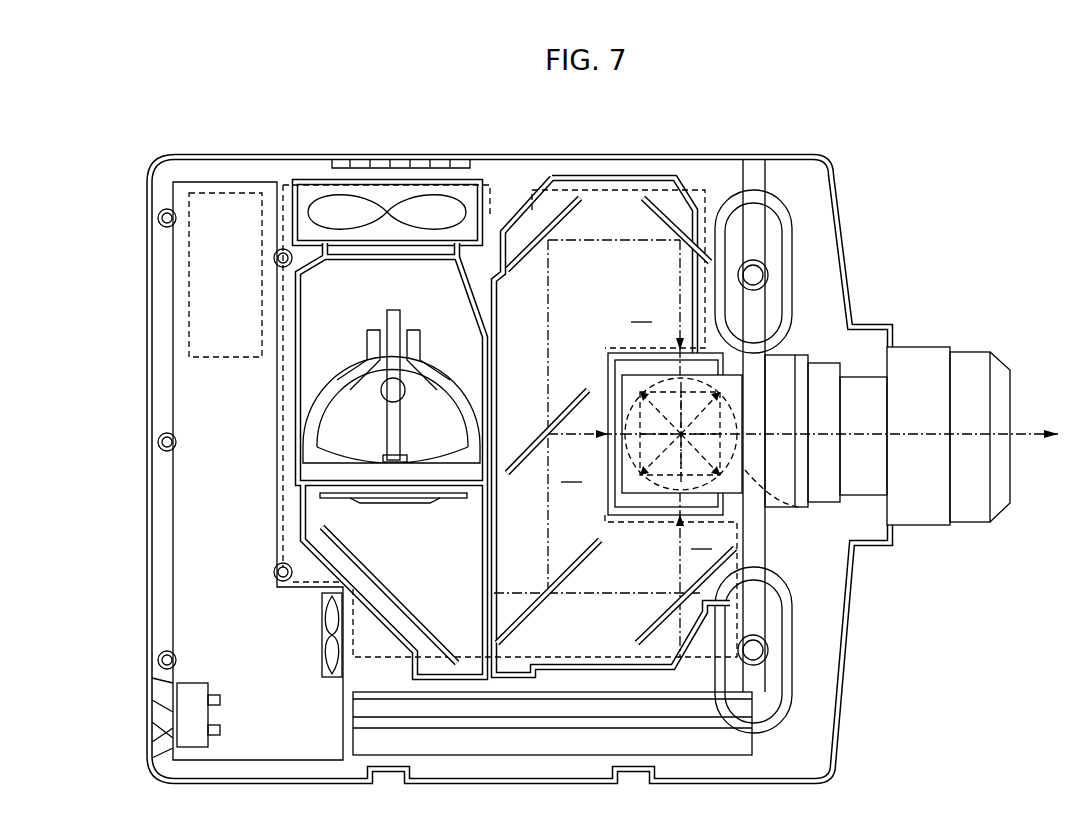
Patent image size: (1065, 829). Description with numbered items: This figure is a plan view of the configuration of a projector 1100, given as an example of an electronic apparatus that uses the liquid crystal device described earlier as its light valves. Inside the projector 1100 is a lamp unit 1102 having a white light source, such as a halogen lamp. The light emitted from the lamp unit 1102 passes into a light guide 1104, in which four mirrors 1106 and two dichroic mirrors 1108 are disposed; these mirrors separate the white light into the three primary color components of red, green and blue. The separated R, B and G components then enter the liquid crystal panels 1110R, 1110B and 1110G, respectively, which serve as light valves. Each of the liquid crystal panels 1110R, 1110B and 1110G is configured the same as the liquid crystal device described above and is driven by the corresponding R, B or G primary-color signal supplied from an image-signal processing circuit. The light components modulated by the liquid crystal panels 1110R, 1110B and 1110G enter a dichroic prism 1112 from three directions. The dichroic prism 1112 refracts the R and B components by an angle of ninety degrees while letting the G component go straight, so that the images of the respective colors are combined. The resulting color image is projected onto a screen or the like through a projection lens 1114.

The projector 1100 is at (850, 162).
The lamp unit 1102 is at (440, 292).
The light guide 1104 is at (535, 235).
The mirrors 1106 is at (555, 222).
The dichroic mirrors 1108 is at (536, 424).
The liquid crystal panel 1110R is at (650, 355).
The liquid crystal panel 1110G is at (613, 408).
The liquid crystal panel 1110B is at (640, 520).
The dichroic prism 1112 is at (793, 508).
The projection lens 1114 is at (978, 358).